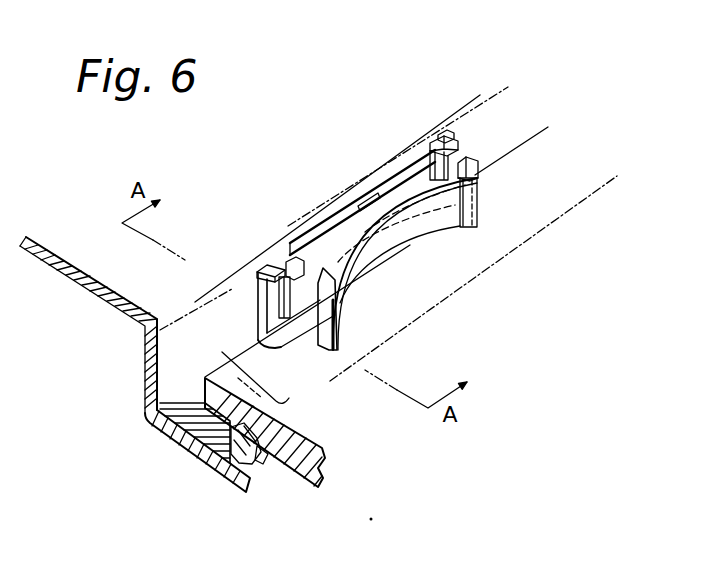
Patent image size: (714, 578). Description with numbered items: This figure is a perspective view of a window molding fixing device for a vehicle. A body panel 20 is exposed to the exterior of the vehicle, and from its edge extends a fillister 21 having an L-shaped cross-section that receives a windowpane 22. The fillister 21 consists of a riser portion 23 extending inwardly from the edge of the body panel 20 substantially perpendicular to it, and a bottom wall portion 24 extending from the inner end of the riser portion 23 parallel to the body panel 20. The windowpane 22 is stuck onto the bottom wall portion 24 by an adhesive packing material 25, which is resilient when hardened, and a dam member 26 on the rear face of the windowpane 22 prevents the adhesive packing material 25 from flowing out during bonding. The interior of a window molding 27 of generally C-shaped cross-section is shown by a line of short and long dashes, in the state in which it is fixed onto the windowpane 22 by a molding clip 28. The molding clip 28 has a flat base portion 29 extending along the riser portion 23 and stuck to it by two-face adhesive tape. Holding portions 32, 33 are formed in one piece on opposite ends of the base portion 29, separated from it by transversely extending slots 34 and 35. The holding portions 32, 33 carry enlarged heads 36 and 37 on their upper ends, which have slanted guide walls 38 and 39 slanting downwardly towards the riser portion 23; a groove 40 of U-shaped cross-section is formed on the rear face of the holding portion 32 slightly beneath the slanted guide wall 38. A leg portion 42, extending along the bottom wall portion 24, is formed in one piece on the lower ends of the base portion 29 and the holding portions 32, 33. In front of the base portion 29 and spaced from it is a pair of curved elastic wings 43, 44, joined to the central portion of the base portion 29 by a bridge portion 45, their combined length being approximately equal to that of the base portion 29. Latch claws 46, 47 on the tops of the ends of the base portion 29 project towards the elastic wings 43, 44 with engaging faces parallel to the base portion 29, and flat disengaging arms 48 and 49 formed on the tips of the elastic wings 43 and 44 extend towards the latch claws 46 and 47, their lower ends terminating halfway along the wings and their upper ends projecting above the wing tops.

The body panel 20 is at (90, 268).
The fillister 21 is at (141, 424).
The windowpane 22 is at (302, 472).
The riser portion 23 is at (145, 381).
The bottom wall portion 24 is at (170, 438).
The adhesive packing material 25 is at (210, 438).
The dam member 26 is at (247, 464).
The window molding 27 is at (323, 402).
The molding clip 28 is at (298, 238).
The base portion 29 is at (318, 222).
The holding portion 32 is at (235, 312).
The holding portion 33 is at (465, 140).
The slot 34 is at (235, 320).
The slot 35 is at (432, 178).
The enlarged head 36 is at (256, 268).
The enlarged head 37 is at (432, 144).
The slanted guide wall 38 is at (268, 262).
The slanted guide wall 39 is at (443, 136).
The groove 40 is at (250, 285).
The leg portion 42 is at (288, 325).
The elastic wing 43 is at (355, 222).
The elastic wing 44 is at (428, 226).
The bridge portion 45 is at (336, 216).
The latch claw 46 is at (304, 273).
The latch claw 47 is at (466, 158).
The disengaging arm 48 is at (328, 303).
The disengaging arm 49 is at (480, 184).